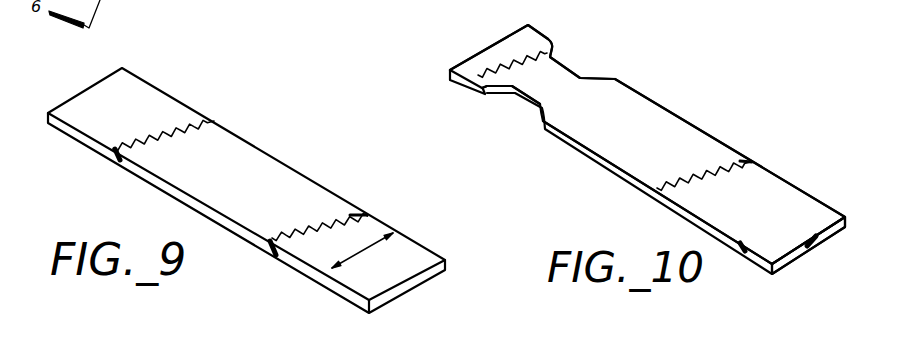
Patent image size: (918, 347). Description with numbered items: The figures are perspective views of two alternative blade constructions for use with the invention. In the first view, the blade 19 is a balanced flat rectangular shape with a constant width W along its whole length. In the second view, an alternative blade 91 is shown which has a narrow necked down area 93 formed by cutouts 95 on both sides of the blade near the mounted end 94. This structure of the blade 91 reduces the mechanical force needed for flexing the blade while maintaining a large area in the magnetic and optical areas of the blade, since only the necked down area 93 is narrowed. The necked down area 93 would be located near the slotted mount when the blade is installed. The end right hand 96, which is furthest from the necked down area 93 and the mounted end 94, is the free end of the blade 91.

In FIG. 9, the blade 19 is at (242, 148).
In FIG. 9, the width W is at (357, 256).
In FIG. 10, the blade 91 is at (646, 143).
In FIG. 10, the necked down area 93 is at (618, 131).
In FIG. 10, the mounted end 94 is at (507, 36).
In FIG. 10, the cutouts 95 is at (557, 60).
In FIG. 10, the end right hand 96 is at (787, 259).